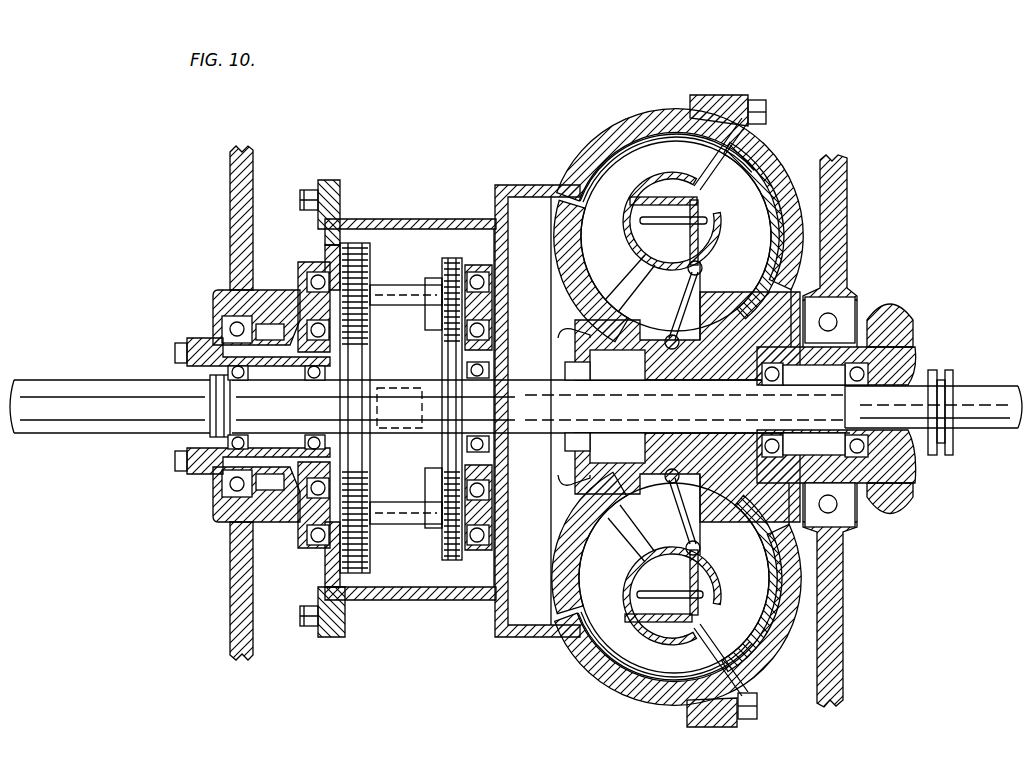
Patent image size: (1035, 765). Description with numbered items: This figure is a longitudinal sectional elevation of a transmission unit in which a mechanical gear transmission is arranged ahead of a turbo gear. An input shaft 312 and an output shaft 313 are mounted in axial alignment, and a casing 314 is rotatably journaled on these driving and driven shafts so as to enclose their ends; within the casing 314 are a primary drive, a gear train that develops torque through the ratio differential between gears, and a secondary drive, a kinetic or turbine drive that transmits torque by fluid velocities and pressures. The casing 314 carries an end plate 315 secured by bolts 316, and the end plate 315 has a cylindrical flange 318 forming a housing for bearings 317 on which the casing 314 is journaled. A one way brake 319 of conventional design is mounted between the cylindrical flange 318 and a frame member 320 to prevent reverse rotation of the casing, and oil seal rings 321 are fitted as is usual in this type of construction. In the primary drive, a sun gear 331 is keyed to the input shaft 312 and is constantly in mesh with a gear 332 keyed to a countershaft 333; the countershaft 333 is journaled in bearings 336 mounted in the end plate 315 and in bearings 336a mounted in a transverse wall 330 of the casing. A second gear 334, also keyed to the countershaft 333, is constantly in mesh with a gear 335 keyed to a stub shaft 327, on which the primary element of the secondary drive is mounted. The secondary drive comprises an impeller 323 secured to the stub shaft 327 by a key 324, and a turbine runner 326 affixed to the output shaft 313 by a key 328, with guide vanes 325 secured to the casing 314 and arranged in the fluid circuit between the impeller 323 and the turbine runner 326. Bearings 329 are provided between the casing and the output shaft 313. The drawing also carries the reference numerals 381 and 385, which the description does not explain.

The input shaft 312 is at (22, 379).
The output shaft 313 is at (1000, 386).
The casing 314 is at (570, 178).
The end plate 315 is at (322, 180).
The bolts 316 is at (300, 198).
The bearings 317 is at (195, 472).
The cylindrical flange 318 is at (222, 478).
The one way brake 319 is at (268, 312).
The frame member 320 is at (232, 600).
The oil seal rings 321 is at (209, 378).
The impeller 323 is at (602, 200).
The key 324 is at (590, 380).
The guide vanes 325 is at (668, 140).
The turbine runner 326 is at (752, 205).
The stub shaft 327 is at (562, 445).
The key 328 is at (738, 330).
The bearings 329 is at (900, 490).
The transverse wall 330 is at (496, 522).
The sun gear 331 is at (362, 376).
The gear 332 is at (358, 243).
The countershaft 333 is at (392, 285).
The second gear 334 is at (452, 258).
The gear 335 is at (440, 465).
The bearings 336 is at (312, 262).
The bearings 336a is at (486, 300).
The link 381 is at (735, 170).
The coupling 385 is at (945, 456).